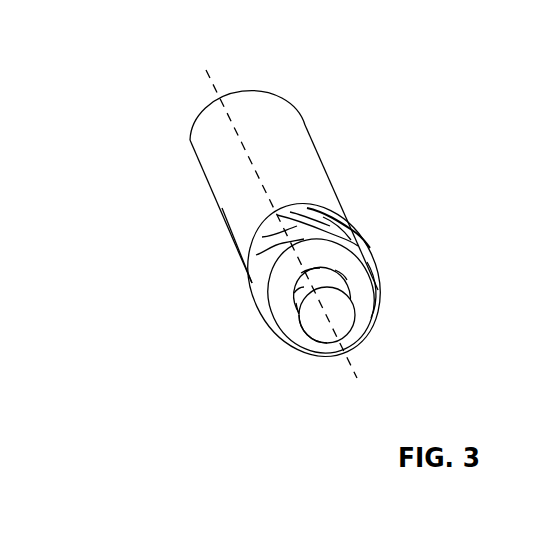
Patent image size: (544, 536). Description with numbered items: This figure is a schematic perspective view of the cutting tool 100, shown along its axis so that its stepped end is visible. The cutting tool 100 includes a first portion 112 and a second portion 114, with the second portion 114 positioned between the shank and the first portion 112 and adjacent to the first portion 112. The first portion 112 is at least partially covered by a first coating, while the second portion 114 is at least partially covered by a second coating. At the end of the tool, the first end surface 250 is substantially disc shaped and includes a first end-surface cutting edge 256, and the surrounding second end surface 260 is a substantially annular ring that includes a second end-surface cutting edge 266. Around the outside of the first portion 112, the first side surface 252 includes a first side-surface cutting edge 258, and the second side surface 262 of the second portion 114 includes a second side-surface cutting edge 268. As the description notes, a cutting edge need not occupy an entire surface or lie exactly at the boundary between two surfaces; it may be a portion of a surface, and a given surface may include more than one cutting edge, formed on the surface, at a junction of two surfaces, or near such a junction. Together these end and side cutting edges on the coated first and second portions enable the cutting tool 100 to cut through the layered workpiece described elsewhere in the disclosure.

The cutting tool 100 is at (171, 100).
The first portion 112 is at (291, 331).
The second portion 114 is at (358, 228).
The first end surface 250 is at (352, 341).
The first side surface 252 is at (363, 312).
The first end-surface cutting edge 256 is at (318, 334).
The first side-surface cutting edge 258 is at (288, 312).
The second end surface 260 is at (347, 266).
The second side surface 262 is at (242, 286).
The second end-surface cutting edge 266 is at (366, 282).
The second side-surface cutting edge 268 is at (361, 244).